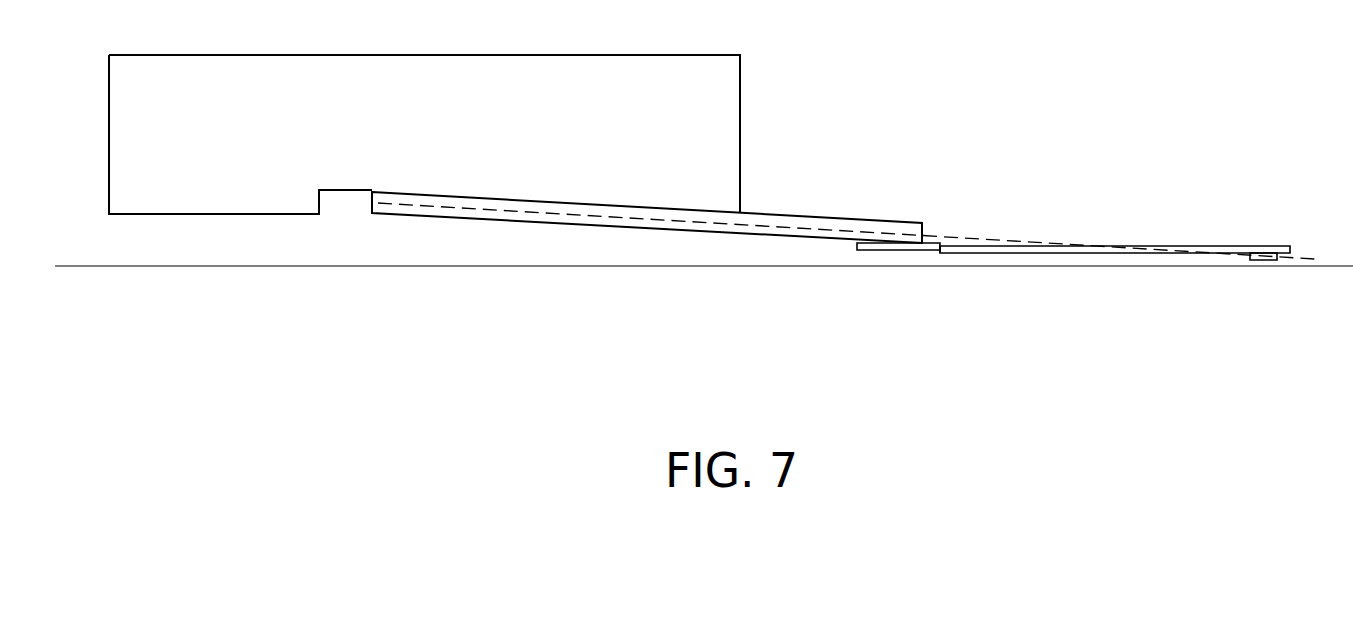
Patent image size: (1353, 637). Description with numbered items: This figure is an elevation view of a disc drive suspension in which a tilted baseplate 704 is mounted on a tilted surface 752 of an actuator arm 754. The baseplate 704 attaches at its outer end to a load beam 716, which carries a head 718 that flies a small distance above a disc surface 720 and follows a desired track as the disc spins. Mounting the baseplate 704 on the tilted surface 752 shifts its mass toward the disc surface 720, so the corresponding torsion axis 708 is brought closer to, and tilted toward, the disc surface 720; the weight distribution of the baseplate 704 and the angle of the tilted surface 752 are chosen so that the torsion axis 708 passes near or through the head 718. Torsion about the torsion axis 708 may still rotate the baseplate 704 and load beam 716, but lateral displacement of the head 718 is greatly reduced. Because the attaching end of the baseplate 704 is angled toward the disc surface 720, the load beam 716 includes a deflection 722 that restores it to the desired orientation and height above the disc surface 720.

The actuator arm 754 is at (661, 122).
The tilted surface 752 is at (356, 191).
The tilted baseplate 704 is at (790, 215).
The torsion axis 708 is at (947, 237).
The load beam 716 is at (1087, 253).
The deflection 722 is at (940, 252).
The head 718 is at (1266, 260).
The disc surface 720 is at (622, 266).